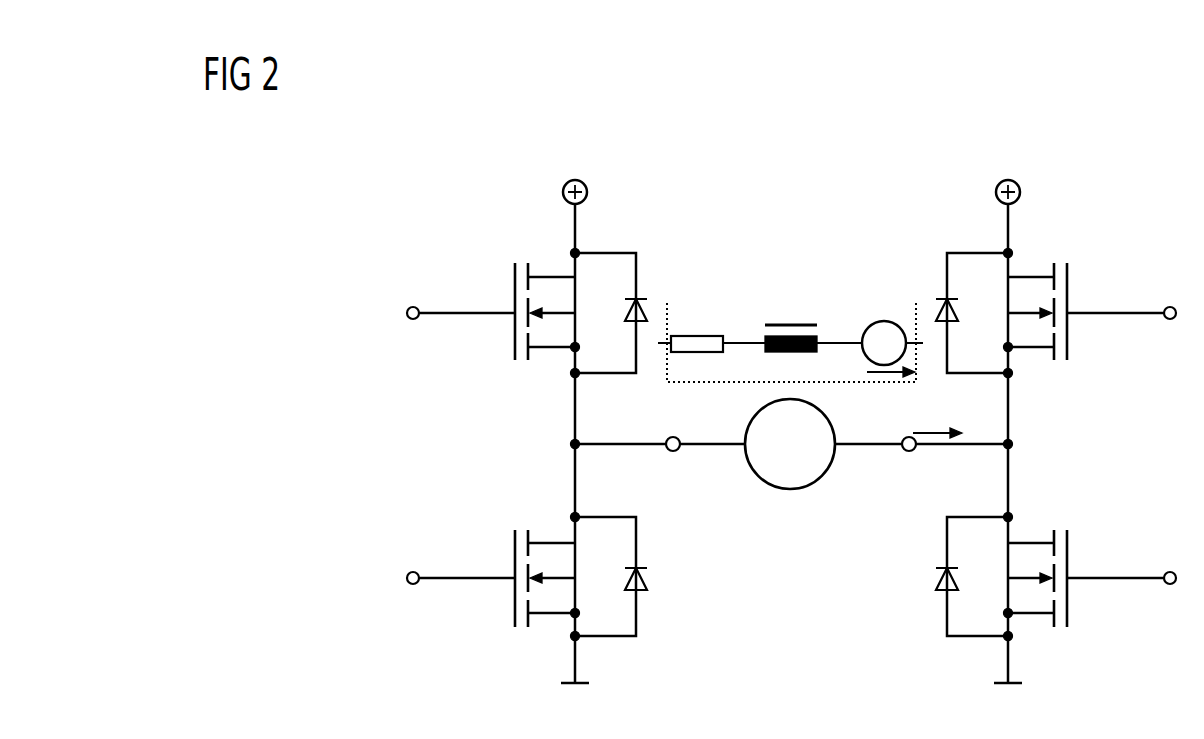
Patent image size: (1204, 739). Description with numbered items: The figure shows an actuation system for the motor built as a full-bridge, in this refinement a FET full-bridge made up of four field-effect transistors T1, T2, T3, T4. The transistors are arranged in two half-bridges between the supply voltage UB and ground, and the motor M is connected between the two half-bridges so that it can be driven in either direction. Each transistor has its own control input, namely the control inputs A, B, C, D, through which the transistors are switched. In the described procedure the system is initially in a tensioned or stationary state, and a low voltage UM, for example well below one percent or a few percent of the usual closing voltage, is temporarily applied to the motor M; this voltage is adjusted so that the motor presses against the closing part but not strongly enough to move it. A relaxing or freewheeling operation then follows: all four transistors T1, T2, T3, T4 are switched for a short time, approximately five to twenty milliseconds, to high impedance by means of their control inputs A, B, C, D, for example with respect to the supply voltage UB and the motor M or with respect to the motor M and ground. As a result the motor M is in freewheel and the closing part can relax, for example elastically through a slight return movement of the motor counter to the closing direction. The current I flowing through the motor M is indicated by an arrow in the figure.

The transistor T1 is at (523, 311).
The transistor T2 is at (523, 578).
The transistor T3 is at (1062, 311).
The transistor T4 is at (1060, 578).
The control input A is at (450, 314).
The control input B is at (450, 579).
The control input C is at (1130, 314).
The control input D is at (1130, 579).
The supply voltage UB is at (804, 187).
The low voltage UM is at (790, 342).
The motor M is at (803, 458).
The motor current I is at (932, 425).